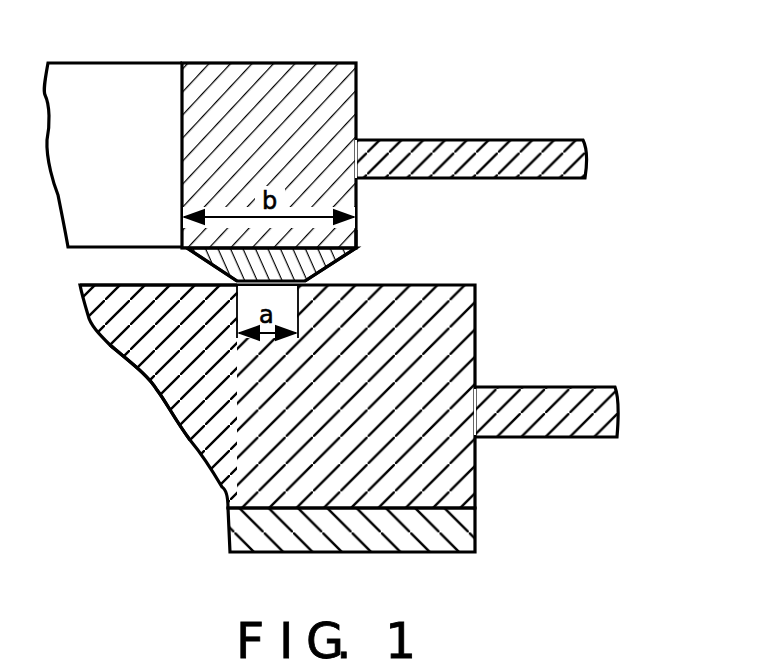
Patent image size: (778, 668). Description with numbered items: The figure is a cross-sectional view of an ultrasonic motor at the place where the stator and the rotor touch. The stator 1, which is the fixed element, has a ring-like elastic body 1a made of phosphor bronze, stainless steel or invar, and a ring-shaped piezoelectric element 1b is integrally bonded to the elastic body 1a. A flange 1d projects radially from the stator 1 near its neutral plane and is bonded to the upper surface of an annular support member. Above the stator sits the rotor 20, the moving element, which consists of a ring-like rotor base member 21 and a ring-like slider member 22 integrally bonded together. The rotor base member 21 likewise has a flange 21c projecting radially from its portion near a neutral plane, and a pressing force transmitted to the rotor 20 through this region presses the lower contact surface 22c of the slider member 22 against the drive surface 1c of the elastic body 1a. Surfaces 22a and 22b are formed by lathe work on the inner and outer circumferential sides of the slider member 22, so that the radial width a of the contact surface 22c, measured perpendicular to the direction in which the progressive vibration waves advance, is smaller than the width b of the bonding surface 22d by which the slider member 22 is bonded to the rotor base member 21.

The stator 1 is at (404, 403).
The elastic body 1a is at (453, 340).
The piezoelectric element 1b is at (458, 530).
The drive surface 1c is at (200, 267).
The flange 1d is at (577, 427).
The rotor 20 is at (114, 56).
The rotor base member 21 is at (272, 66).
The flange 21c is at (467, 147).
The slider member 22 is at (118, 347).
The surface 22a is at (194, 256).
The surface 22b is at (330, 268).
The contact surface 22c is at (157, 390).
The bonding surface 22d is at (348, 240).